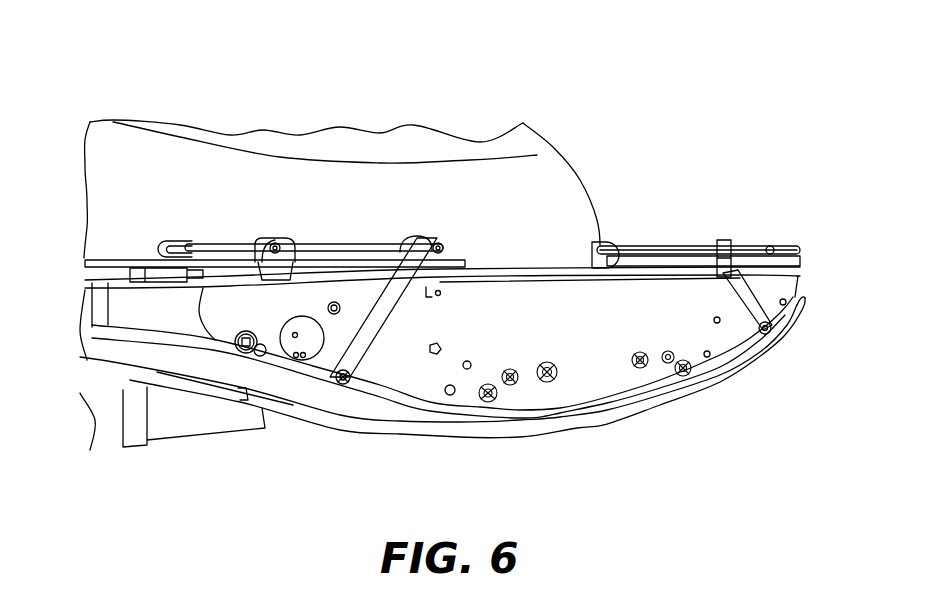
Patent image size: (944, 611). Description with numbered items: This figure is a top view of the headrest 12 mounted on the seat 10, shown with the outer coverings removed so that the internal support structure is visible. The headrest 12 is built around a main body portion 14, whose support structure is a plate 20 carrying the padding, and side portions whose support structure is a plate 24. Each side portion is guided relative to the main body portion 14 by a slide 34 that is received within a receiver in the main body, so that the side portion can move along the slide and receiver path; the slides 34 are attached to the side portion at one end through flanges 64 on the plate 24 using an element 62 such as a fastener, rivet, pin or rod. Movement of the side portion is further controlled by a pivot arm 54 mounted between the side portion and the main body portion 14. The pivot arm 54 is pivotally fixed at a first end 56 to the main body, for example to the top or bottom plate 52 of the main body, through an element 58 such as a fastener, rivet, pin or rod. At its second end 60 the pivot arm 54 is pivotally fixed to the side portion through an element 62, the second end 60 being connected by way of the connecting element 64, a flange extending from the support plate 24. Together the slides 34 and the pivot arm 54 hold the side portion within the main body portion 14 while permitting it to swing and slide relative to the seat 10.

The seat 10 is at (650, 208).
The headrest 12 is at (442, 406).
The main body portion 14 is at (607, 417).
The plate 20 is at (555, 277).
The plate 24 is at (343, 259).
The slide 34 is at (272, 243).
The top or bottom plate 52 is at (420, 388).
The pivot arm 54 is at (390, 318).
The first end 56 is at (345, 375).
The element 58 is at (347, 383).
The second end 60 is at (430, 240).
The element 62 is at (273, 246).
The connecting element 64 is at (258, 243).